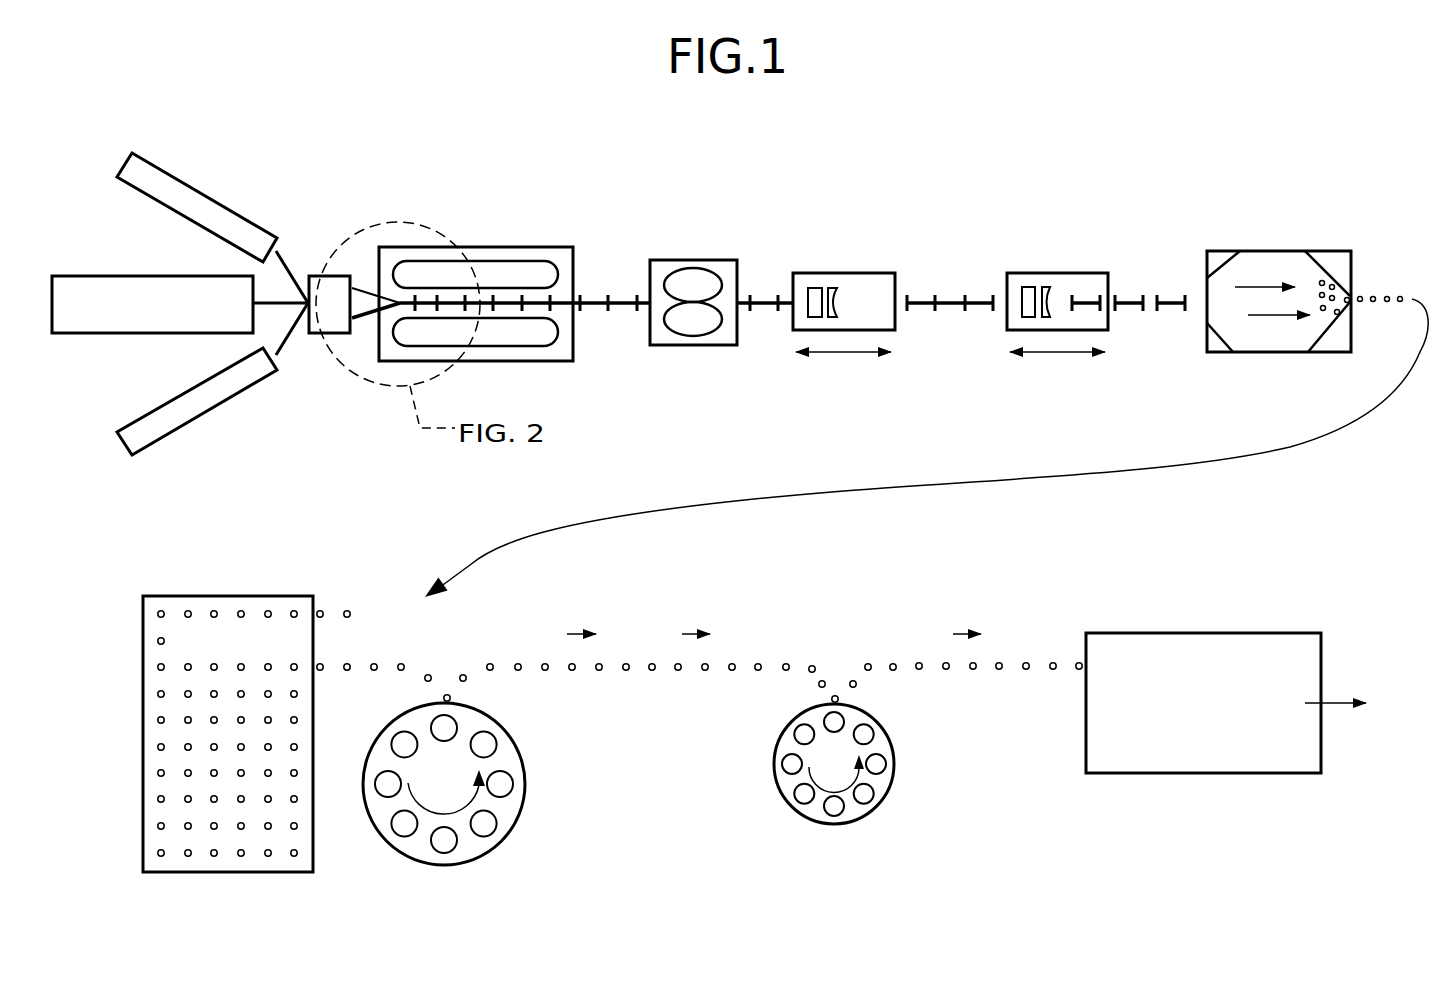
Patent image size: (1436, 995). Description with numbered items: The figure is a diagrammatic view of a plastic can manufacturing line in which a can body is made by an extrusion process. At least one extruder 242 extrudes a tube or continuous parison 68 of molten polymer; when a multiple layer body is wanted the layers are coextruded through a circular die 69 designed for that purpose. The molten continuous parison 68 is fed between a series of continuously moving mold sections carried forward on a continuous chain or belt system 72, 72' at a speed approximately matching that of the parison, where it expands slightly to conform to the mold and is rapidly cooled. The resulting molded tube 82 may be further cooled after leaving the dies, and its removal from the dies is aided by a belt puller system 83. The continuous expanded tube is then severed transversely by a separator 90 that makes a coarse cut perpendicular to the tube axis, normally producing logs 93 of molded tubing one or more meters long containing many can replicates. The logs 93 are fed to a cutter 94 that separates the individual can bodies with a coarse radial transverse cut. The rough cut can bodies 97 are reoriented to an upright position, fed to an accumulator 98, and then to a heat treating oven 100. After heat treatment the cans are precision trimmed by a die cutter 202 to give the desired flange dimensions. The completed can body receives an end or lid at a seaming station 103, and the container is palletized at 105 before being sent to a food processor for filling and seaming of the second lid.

The extruder 242 is at (160, 202).
The continuous parison 68 is at (373, 297).
The circular die 69 is at (322, 334).
The continuous chain or belt system 72 is at (475, 235).
The continuous chain or belt system 72' is at (479, 361).
The molded tube 82 is at (595, 297).
The belt puller system 83 is at (680, 346).
The separator 90 is at (845, 272).
The logs 93 is at (928, 297).
The cutter 94 is at (1075, 331).
The rough cut can bodies 97 is at (1163, 297).
The accumulator 98 is at (1297, 250).
The heat treating oven 100 is at (252, 595).
The die cutter 202 is at (512, 832).
The seaming station 103 is at (793, 808).
The palletizing station 105 is at (1247, 774).